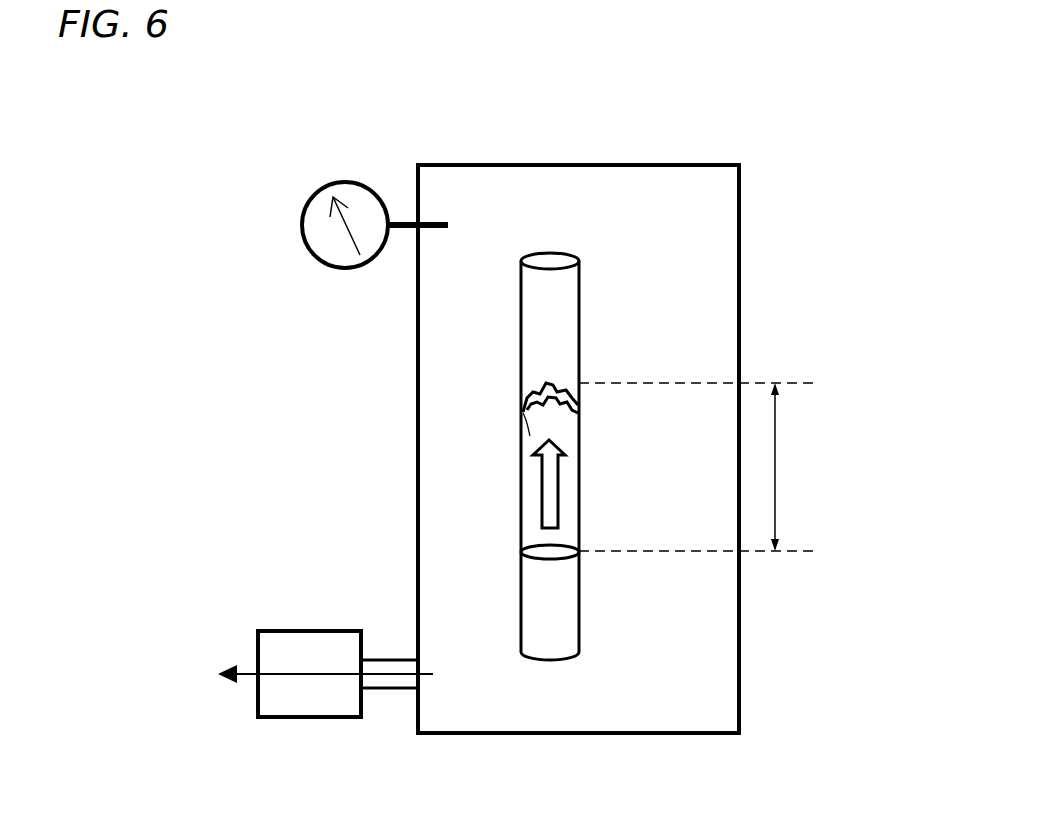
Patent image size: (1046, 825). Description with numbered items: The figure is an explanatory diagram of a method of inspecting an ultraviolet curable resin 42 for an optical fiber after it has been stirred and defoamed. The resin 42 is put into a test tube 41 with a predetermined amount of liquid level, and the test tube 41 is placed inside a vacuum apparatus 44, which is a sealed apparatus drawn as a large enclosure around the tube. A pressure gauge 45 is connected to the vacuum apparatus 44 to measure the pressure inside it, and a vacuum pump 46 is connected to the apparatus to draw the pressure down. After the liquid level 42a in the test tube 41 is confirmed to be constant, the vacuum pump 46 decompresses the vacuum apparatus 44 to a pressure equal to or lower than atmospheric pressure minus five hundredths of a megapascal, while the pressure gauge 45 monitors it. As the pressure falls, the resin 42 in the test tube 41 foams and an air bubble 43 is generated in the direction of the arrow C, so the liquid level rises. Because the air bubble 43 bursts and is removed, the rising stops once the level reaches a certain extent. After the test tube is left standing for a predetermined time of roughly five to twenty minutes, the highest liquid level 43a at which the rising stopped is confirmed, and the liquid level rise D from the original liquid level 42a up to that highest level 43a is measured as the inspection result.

The test tube 41 is at (580, 350).
The ultraviolet curable resin for an optical fiber 42 is at (560, 612).
The air bubble 43 is at (560, 433).
The vacuum apparatus 44 is at (590, 165).
The pressure gauge 45 is at (350, 181).
The vacuum pump 46 is at (300, 717).
The highest liquid level 43a is at (793, 383).
The liquid level 42a is at (790, 553).
The arrow C is at (560, 493).
The liquid level rise D is at (775, 475).